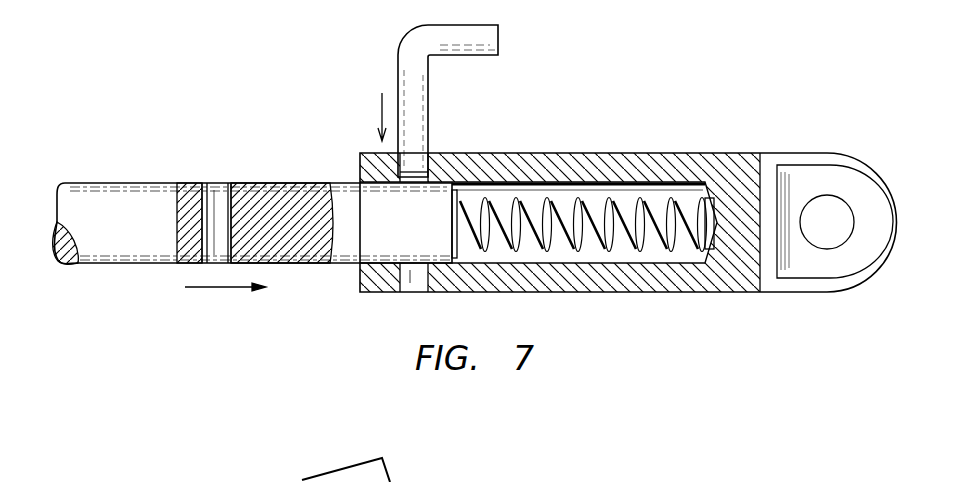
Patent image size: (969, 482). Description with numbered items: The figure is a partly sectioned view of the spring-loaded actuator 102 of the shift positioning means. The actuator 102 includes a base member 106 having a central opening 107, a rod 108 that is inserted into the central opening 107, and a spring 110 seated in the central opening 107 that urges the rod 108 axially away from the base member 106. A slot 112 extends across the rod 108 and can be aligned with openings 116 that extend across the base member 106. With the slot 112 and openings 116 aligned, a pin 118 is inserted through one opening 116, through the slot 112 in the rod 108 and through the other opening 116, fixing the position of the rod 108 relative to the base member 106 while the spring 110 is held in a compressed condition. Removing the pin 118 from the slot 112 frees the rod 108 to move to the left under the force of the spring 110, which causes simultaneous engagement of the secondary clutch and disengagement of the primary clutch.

The spring-loaded actuator 102 is at (475, 177).
The base member 106 is at (713, 292).
The central opening 107 is at (593, 192).
The rod 108 is at (183, 183).
The spring 110 is at (633, 252).
The slot 112 is at (216, 192).
The openings 116 is at (414, 178).
The pin 118 is at (445, 57).